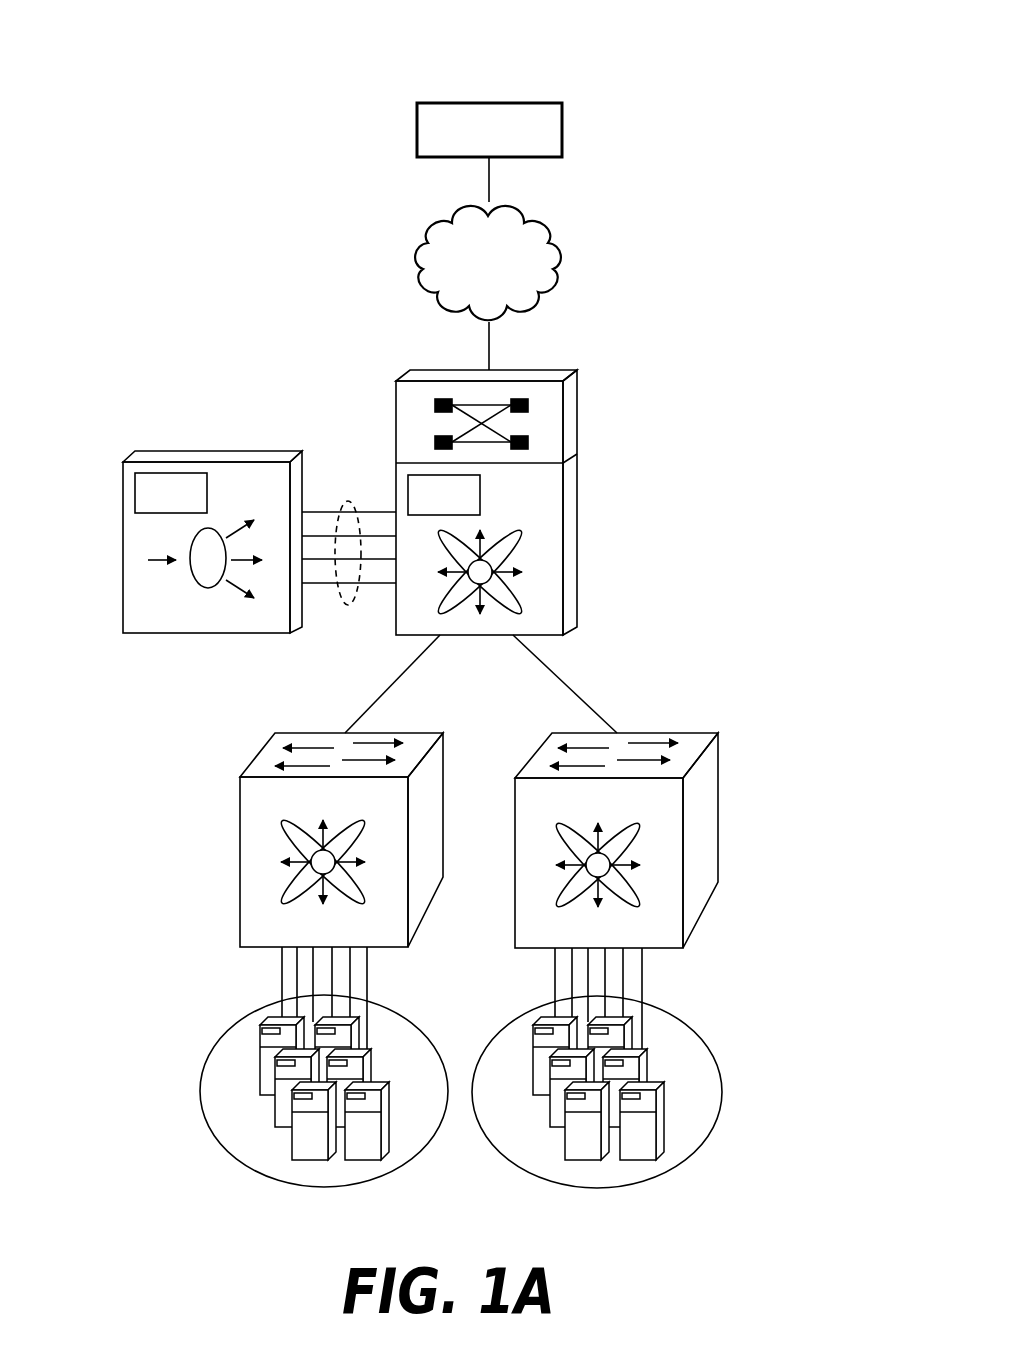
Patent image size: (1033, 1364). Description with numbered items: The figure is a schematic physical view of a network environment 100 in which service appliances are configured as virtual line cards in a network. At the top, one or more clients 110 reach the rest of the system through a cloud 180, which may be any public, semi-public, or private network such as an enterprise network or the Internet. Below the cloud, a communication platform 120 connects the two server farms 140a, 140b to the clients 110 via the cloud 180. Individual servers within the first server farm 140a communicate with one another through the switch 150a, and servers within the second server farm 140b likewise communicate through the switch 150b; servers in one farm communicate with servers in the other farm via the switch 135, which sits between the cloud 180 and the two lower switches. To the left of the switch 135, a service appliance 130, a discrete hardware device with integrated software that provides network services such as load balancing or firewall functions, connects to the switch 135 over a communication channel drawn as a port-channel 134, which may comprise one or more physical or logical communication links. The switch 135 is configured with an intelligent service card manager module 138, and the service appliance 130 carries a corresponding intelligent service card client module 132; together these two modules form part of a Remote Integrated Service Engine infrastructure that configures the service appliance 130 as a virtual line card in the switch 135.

The network environment 100 is at (533, 52).
The clients 110 is at (562, 115).
The cloud 180 is at (572, 248).
The service appliance 130 is at (174, 542).
The intelligent service card client module (iSCC) 132 is at (207, 493).
The port-channel 134 is at (355, 493).
The switch 135 is at (526, 502).
The intelligent service card manager module (iSCM) 138 is at (480, 495).
The communication platform 120 is at (596, 685).
The switch 150a is at (240, 845).
The switch 150b is at (707, 850).
The server farm 140a is at (222, 1145).
The server farm 140b is at (697, 1146).